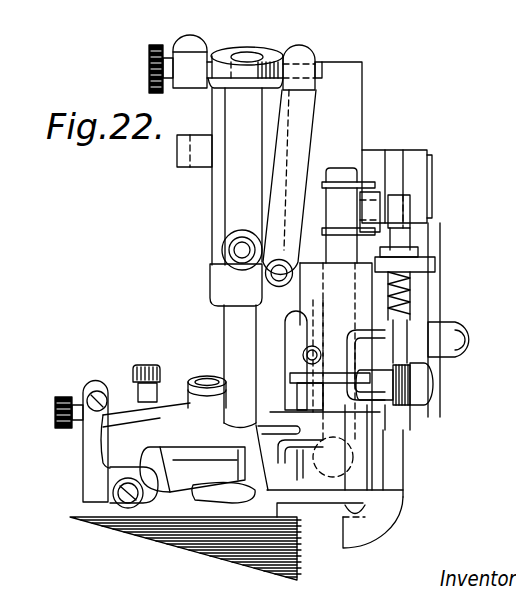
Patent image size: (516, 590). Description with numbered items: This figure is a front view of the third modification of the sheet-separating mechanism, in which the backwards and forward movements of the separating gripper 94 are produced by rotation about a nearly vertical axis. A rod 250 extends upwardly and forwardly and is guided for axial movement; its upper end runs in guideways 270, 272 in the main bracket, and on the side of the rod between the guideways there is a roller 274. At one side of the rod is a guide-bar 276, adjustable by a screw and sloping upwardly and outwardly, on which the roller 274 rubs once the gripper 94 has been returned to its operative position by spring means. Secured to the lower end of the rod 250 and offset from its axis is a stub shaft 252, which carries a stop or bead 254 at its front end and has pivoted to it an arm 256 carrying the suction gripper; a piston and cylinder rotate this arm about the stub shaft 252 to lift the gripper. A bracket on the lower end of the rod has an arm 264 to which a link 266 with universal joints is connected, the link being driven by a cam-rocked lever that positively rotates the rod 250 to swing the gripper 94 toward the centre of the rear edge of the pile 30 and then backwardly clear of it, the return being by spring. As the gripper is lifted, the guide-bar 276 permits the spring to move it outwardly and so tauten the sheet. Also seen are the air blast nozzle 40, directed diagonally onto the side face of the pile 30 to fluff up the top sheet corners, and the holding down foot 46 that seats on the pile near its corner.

The guideway 272 is at (227, 57).
The guide-bar 276 is at (287, 120).
The roller 274 is at (223, 238).
The guideway 270 is at (230, 287).
The rod 250 is at (238, 322).
The link 266 is at (297, 350).
The arm 256 is at (178, 403).
The stub shaft 252 is at (118, 467).
The stop 254 is at (110, 487).
The arm 264 is at (336, 445).
The holding down foot 46 is at (400, 497).
The air blast nozzle 40 is at (350, 537).
The pile 30 is at (292, 555).
The separating gripper 94 is at (195, 440).